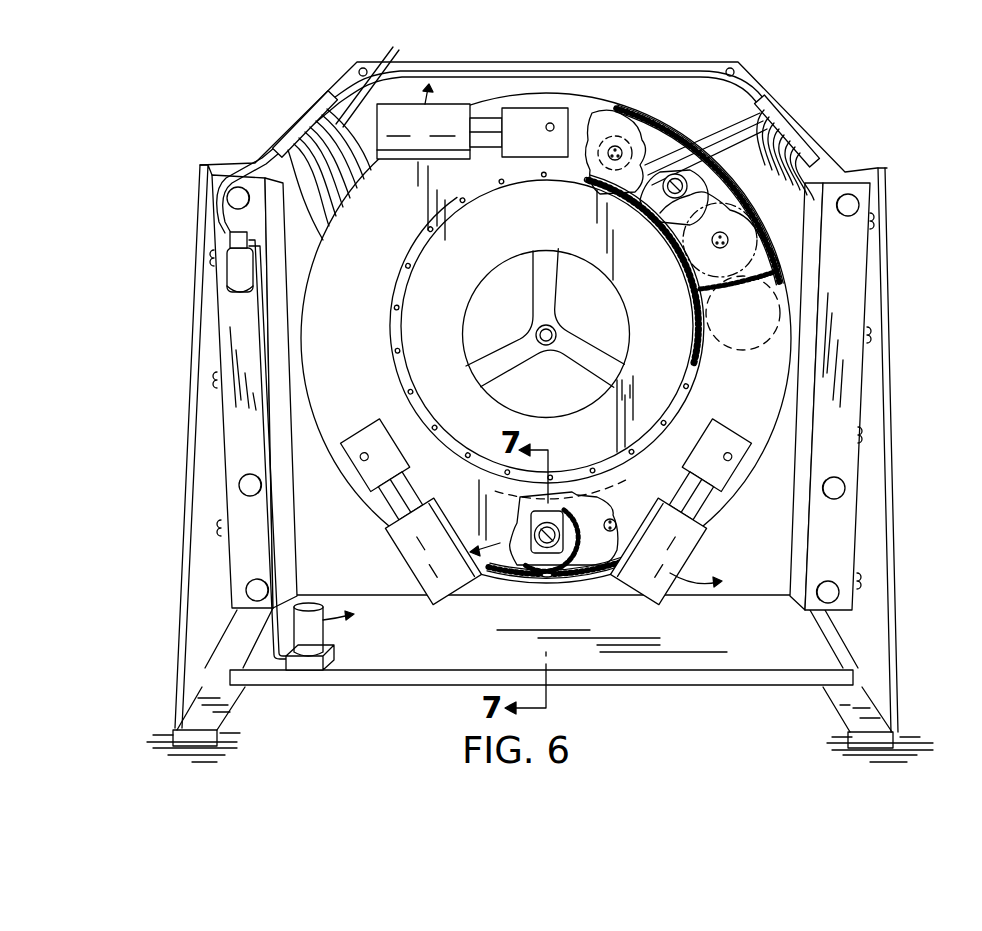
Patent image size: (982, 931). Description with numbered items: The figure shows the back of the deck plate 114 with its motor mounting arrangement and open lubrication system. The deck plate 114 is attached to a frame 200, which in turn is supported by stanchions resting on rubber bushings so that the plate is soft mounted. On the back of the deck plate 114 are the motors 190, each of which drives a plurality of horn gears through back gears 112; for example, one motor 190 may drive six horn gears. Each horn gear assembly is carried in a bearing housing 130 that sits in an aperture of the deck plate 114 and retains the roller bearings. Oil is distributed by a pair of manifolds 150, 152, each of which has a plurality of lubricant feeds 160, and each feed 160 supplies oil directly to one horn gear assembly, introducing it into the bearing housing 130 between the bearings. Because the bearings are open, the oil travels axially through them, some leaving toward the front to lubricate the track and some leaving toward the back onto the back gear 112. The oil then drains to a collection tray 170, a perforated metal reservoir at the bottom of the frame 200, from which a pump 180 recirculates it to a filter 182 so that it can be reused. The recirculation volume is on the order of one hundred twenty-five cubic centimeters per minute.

The back gear 112 is at (782, 268).
The deck plate 114 is at (698, 63).
The bearing housing 130 is at (670, 200).
The manifold 150 is at (312, 112).
The manifold 152 is at (792, 133).
The lubricant feed 160 is at (546, 502).
The collection tray 170 is at (398, 678).
The pump 180 is at (330, 634).
The filter 182 is at (236, 275).
The motor 190 is at (450, 112).
The frame 200 is at (892, 226).